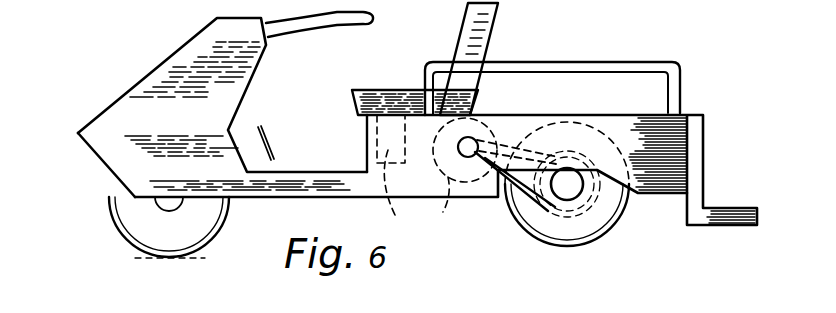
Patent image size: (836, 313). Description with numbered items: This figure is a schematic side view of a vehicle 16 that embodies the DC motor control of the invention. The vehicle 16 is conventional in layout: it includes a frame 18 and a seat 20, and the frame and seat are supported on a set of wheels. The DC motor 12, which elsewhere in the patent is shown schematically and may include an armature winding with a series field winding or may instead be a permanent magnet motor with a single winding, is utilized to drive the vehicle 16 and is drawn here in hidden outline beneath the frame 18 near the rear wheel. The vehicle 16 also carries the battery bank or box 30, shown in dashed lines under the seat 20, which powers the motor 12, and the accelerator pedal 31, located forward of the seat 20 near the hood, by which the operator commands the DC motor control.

The vehicle 16 is at (176, 44).
The frame 18 is at (297, 184).
The seat 20 is at (391, 94).
The accelerator pedal 31 is at (264, 133).
The battery bank or box 30 is at (413, 168).
The DC motor 12 is at (447, 209).